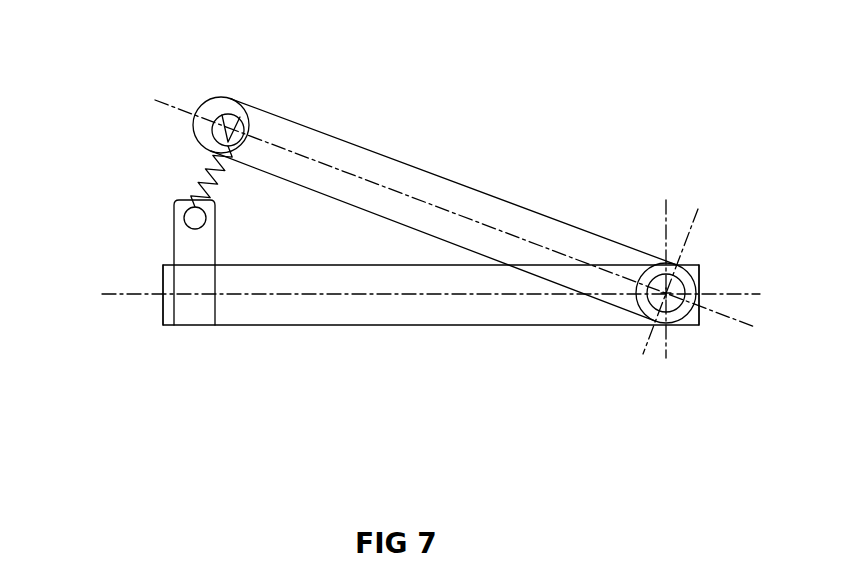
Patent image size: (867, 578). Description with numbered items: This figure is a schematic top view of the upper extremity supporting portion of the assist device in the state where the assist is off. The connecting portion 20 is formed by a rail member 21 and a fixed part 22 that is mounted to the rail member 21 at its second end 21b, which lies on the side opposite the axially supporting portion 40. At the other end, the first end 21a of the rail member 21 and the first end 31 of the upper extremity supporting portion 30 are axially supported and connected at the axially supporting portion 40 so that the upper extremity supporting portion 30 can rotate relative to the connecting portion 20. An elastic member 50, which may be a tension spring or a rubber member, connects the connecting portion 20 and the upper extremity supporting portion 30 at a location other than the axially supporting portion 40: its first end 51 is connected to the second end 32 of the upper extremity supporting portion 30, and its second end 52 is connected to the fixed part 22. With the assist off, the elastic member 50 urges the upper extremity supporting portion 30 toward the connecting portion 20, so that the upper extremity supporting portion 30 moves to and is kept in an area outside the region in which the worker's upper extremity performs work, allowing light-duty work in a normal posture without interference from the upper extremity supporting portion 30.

The connecting portion 20 is at (431, 335).
The rail member 21 is at (253, 316).
The first end of the rail member 21a is at (700, 325).
The second end of the rail member 21b is at (162, 307).
The fixed part 22 is at (197, 316).
The upper extremity supporting portion 30 is at (428, 182).
The first end of the upper extremity supporting portion 31 is at (690, 276).
The second end of the upper extremity supporting portion 32 is at (228, 110).
The axially supporting portion 40 is at (678, 328).
The elastic member 50 is at (188, 172).
The first end of the elastic member 51 is at (222, 126).
The second end of the elastic member 52 is at (190, 210).